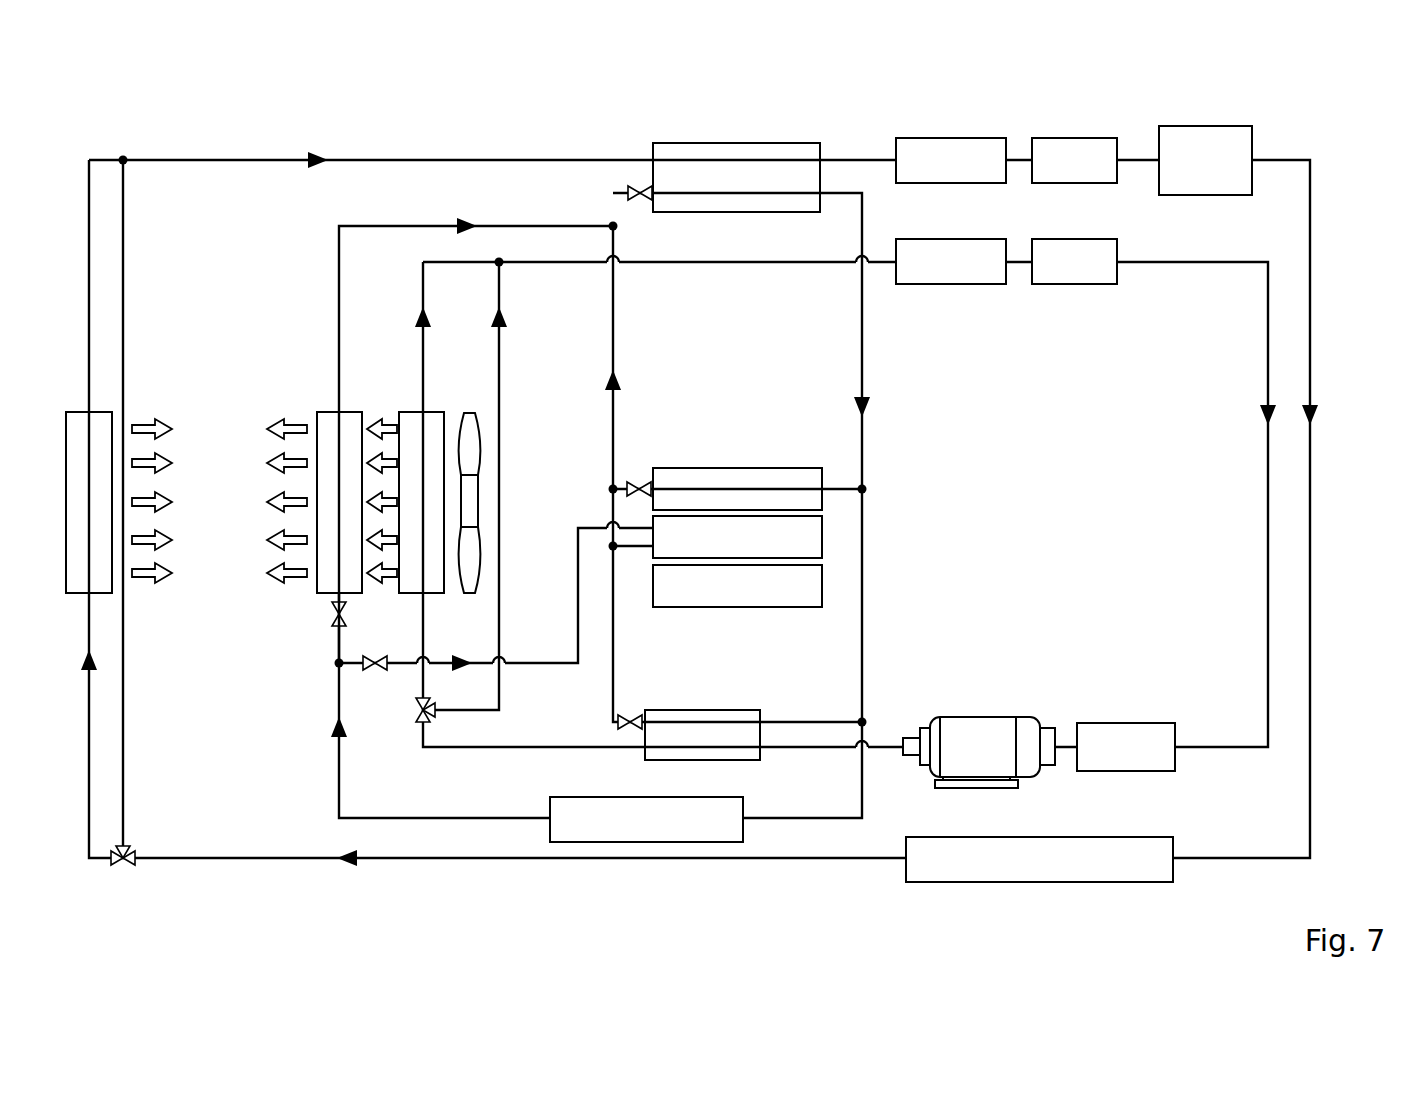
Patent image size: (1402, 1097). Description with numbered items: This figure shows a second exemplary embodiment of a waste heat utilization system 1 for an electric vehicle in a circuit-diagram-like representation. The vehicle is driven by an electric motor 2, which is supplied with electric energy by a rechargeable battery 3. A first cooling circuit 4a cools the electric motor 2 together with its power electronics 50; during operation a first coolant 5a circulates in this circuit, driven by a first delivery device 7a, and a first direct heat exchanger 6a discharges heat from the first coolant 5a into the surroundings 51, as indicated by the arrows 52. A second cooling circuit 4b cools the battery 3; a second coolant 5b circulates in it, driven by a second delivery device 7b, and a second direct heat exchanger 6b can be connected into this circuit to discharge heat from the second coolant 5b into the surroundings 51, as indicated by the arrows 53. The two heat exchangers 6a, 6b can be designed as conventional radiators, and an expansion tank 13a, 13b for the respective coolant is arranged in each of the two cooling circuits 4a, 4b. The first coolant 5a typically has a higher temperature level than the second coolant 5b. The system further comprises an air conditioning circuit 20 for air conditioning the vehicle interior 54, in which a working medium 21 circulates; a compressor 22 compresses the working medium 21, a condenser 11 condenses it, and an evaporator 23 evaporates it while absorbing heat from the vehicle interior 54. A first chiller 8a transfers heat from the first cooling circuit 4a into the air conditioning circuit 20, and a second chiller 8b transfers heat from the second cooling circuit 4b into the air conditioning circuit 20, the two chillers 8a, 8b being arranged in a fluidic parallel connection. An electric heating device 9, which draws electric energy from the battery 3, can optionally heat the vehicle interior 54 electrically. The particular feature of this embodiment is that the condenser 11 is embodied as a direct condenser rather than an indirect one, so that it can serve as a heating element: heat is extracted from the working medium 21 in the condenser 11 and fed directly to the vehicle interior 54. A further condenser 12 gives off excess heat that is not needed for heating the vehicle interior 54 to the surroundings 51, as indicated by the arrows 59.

The waste heat utilization system 1 is at (1342, 160).
The electric motor 2 is at (971, 761).
The battery 3 is at (1033, 875).
The first cooling circuit 4a is at (1132, 252).
The second cooling circuit 4b is at (405, 150).
The first coolant 5a is at (412, 318).
The second coolant 5b is at (318, 150).
The first direct heat exchanger 6a is at (410, 412).
The second direct heat exchanger 6b is at (67, 412).
The first delivery device 7a is at (1060, 276).
The second delivery device 7b is at (1060, 175).
The first chiller 8a is at (708, 710).
The second chiller 8b is at (737, 143).
The electric heating device 9 is at (730, 601).
The condenser 11 is at (723, 552).
The further condenser 12 is at (317, 412).
The expansion tank 13a is at (930, 276).
The expansion tank 13b is at (930, 175).
The air conditioning circuit 20 is at (512, 223).
The working medium 21 is at (464, 216).
The compressor 22 is at (632, 835).
The evaporator 23 is at (688, 468).
The power electronics 50 is at (1112, 761).
The surroundings 51 is at (206, 522).
The arrows 52 is at (380, 418).
The arrows 53 is at (174, 498).
The vehicle interior 54 is at (723, 435).
The arrows 59 is at (282, 422).